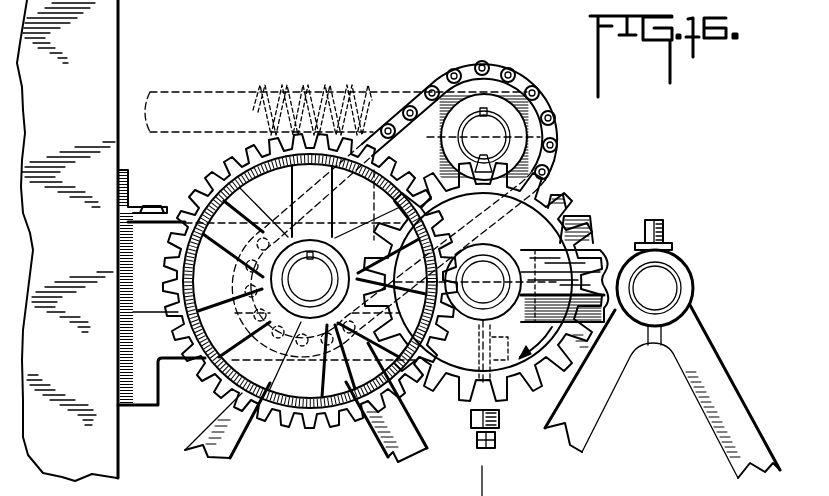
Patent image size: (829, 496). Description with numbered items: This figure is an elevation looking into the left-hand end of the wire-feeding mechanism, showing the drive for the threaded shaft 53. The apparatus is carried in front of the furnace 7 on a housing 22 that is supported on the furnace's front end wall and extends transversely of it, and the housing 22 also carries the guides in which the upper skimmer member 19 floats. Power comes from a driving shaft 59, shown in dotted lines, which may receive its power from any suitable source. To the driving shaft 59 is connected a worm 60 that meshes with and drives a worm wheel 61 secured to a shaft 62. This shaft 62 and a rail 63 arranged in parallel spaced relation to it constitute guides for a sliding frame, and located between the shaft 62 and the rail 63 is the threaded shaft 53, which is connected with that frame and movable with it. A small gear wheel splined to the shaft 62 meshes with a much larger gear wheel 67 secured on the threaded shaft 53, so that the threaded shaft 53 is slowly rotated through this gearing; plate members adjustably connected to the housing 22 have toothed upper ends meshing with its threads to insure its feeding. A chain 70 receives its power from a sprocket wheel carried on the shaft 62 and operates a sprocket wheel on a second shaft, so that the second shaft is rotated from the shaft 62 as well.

The furnace 7 is at (103, 459).
The housing 22 is at (145, 385).
The driving shaft 59 is at (195, 97).
The worm 60 is at (312, 85).
The worm wheel 61 is at (212, 168).
The shaft 62 is at (292, 277).
The chain 70 is at (375, 142).
The threaded shaft 53 is at (488, 265).
The gear wheel 67 is at (585, 227).
The rail 63 is at (657, 273).
The skimmer member 19 is at (498, 481).